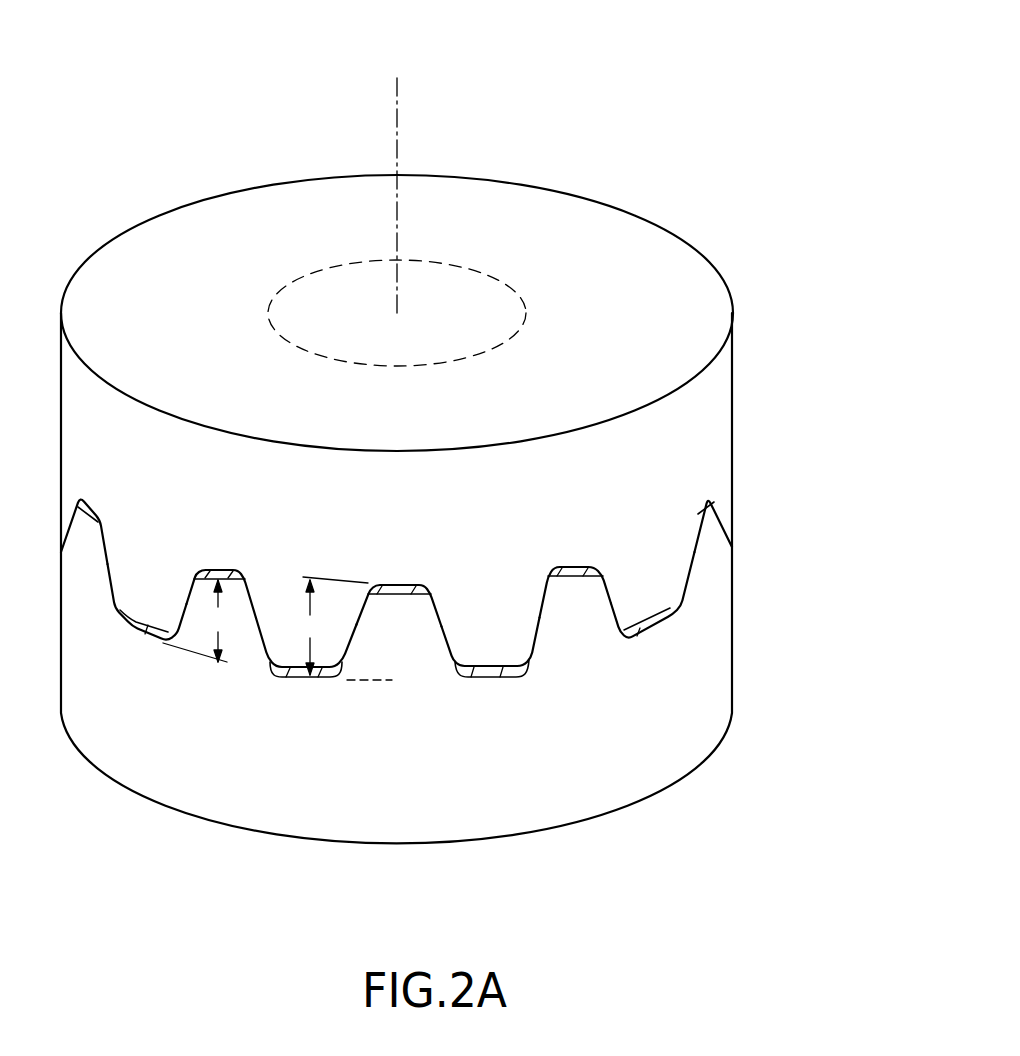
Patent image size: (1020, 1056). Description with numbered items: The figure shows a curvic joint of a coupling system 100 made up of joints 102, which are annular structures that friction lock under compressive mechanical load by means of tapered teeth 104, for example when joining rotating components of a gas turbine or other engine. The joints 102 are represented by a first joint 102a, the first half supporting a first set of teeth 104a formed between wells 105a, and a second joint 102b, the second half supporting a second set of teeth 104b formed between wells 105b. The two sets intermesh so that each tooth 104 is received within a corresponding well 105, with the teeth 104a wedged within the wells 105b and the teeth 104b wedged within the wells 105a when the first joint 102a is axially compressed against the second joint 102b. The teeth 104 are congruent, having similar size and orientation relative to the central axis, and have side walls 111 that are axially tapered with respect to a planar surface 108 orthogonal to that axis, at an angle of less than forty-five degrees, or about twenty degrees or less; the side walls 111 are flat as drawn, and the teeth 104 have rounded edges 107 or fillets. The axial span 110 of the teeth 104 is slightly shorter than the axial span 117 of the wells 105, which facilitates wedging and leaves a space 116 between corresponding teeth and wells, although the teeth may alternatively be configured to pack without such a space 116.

The coupling system 100 is at (607, 107).
The joints 102 is at (454, 509).
The first joint 102a is at (732, 367).
The second joint 102b is at (732, 673).
The teeth 104 is at (396, 615).
The first set of teeth 104a is at (490, 666).
The second set of teeth 104b is at (407, 597).
The wells 105 is at (496, 633).
The wells of the first joint 105a is at (424, 591).
The wells of the second joint 105b is at (500, 678).
The edges 107 is at (202, 563).
The planar surface 108 is at (373, 681).
The axial span of teeth 110 is at (197, 621).
The side walls 111 is at (258, 618).
The space 116 is at (225, 569).
The axial span of wells 117 is at (330, 626).